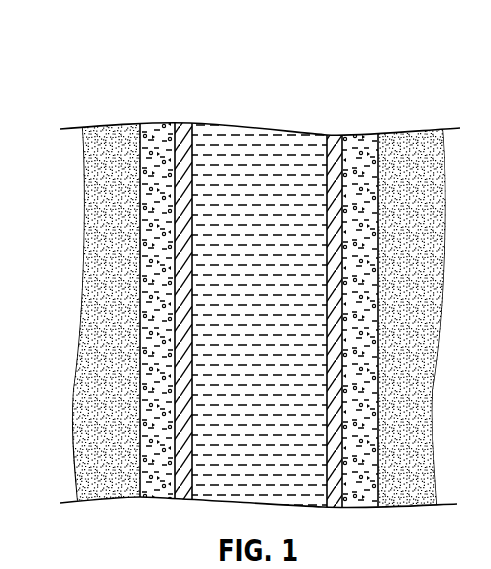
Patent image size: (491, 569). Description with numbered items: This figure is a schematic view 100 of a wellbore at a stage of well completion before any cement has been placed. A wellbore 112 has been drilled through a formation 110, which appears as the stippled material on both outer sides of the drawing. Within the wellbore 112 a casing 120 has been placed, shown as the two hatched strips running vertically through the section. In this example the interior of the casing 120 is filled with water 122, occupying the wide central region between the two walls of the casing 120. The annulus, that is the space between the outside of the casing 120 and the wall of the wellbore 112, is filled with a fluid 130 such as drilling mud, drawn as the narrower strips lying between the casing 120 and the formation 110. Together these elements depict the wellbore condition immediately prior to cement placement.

The schematic view 100 is at (247, 264).
The formation 110 is at (430, 234).
The wellbore 112 is at (140, 154).
The casing 120 is at (330, 146).
The water 122 is at (247, 148).
The fluid 130 is at (362, 149).